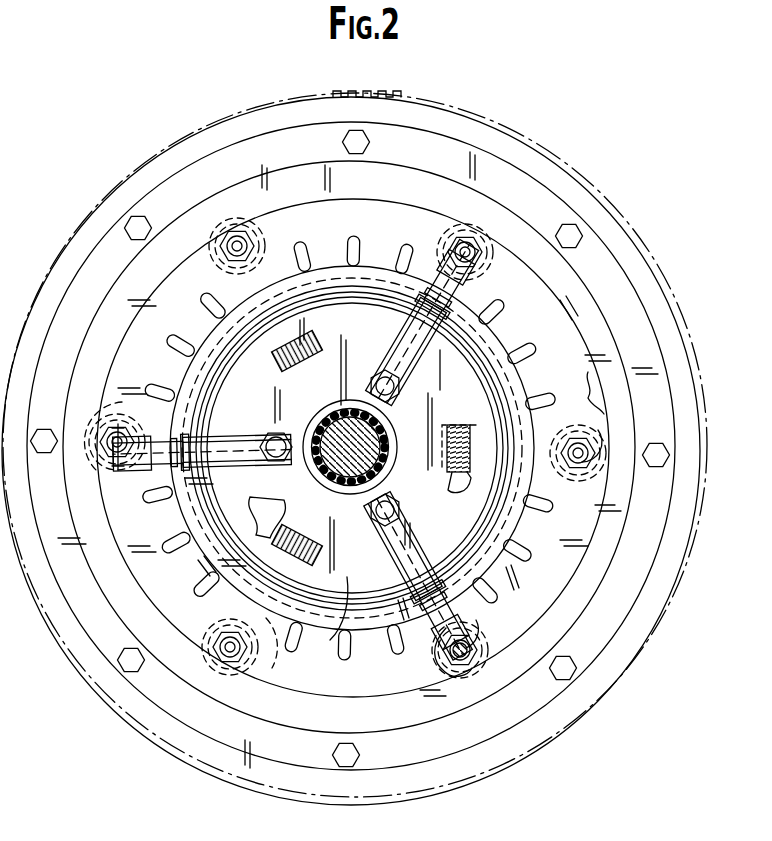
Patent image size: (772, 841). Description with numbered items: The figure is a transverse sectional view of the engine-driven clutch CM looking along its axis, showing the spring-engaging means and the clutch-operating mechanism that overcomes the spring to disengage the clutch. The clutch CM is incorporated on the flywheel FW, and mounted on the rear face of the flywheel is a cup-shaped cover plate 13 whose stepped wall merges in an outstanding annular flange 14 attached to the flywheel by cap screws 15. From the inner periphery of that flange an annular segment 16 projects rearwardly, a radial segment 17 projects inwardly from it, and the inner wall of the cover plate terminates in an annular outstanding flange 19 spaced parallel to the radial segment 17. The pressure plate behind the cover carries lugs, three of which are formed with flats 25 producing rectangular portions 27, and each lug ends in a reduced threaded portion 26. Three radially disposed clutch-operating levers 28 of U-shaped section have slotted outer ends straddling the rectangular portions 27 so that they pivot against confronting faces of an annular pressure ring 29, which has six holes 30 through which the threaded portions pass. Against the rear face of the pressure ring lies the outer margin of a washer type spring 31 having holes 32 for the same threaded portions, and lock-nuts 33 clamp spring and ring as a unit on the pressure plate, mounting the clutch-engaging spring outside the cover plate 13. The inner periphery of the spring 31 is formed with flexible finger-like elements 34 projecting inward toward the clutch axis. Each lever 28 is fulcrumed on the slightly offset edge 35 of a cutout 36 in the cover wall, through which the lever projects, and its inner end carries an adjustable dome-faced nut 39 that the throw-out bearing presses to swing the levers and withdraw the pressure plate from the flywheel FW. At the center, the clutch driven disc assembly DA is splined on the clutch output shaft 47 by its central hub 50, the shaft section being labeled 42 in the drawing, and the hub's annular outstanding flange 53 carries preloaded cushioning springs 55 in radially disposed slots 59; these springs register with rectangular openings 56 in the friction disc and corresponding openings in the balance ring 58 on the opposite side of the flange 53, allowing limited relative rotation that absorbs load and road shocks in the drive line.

The cover plate 13 is at (664, 324).
The annular flange 14 is at (647, 353).
The cap screws 15 is at (563, 248).
The annular segment 16 is at (672, 388).
The radial segment 17 is at (505, 213).
The annular outstanding flange 19 is at (392, 262).
The flats 25 is at (114, 386).
The threaded portion 26 is at (118, 462).
The rectangular portions 27 is at (106, 468).
The clutch-operating levers 28 is at (404, 337).
The pressure ring 29 is at (590, 398).
The holes 30 is at (460, 672).
The washer type spring 31 is at (534, 539).
The holes 32 is at (482, 644).
The lock-nuts 33 is at (240, 232).
The finger-like elements 34 is at (464, 307).
The offset edge 35 is at (426, 332).
The cutout 36 is at (413, 307).
The dome-faced nut 39 is at (396, 394).
The shaft 42 is at (380, 434).
The clutch output shaft 47 is at (341, 410).
The central hub 50 is at (387, 457).
The annular outstanding flange 53 is at (250, 496).
The cushioning springs 55 is at (306, 368).
The rectangular openings 56 is at (311, 362).
The balance ring 58 is at (288, 493).
The radially disposed slots 59 is at (458, 492).
The clutch driven disc assembly DA is at (287, 483).
The flywheel FW is at (377, 449).
The clutch CM is at (606, 624).